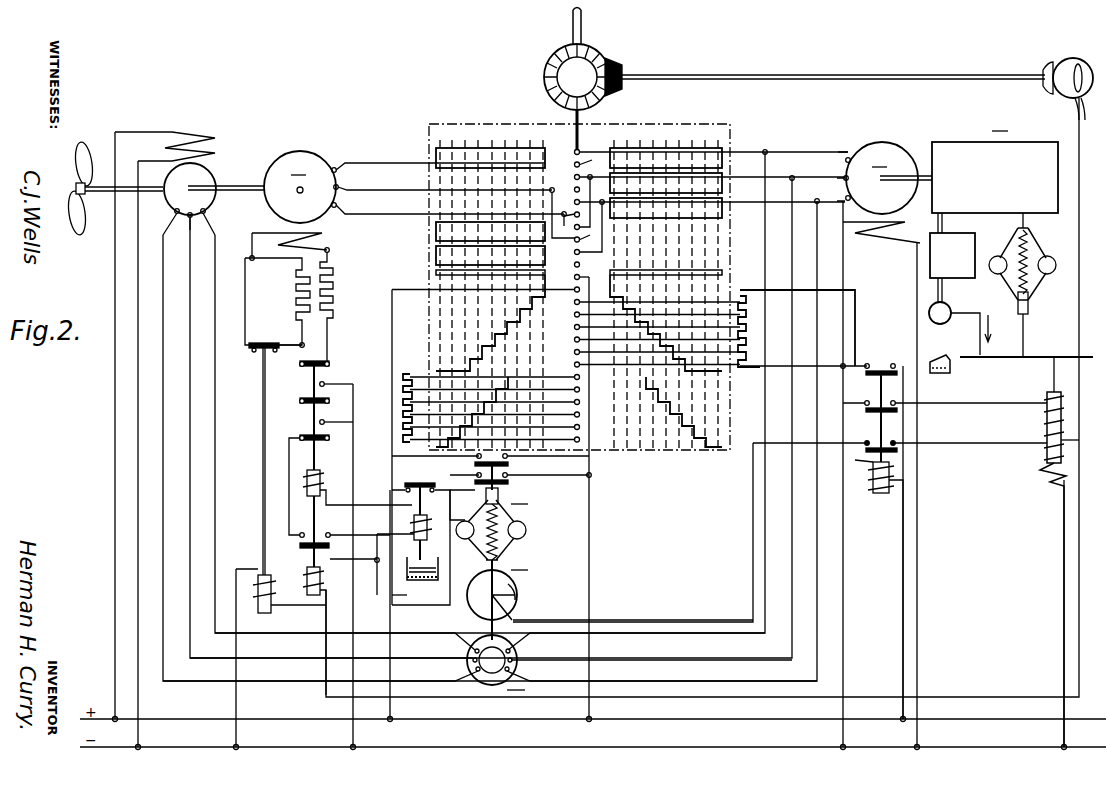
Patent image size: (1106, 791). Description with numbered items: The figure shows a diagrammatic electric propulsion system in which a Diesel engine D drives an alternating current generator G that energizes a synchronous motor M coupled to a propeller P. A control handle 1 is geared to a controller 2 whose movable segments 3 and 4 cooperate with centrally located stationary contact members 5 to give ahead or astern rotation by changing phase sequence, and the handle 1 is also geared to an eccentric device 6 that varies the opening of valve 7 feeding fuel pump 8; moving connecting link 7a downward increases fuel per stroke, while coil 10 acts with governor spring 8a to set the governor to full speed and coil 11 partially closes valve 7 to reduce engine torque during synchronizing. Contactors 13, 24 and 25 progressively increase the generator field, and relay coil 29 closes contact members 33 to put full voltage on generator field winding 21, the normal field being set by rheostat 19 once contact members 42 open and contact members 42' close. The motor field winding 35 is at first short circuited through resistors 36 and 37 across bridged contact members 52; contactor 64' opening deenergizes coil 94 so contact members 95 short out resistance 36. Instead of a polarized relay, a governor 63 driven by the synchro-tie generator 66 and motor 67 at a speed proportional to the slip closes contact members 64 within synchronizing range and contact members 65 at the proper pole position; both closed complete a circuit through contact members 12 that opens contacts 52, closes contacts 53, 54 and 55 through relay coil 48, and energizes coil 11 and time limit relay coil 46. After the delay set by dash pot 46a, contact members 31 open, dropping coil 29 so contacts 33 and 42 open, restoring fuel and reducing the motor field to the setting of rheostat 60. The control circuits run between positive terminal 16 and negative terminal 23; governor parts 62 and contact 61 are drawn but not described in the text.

The propeller P is at (92, 152).
The generator 66 is at (164, 217).
The synchronous motor M is at (301, 187).
The control handle 1 is at (568, 31).
The controller 2 is at (620, 348).
The movable segments 3 is at (722, 193).
The movable segments 4 is at (436, 258).
The stationary contact members 5 is at (574, 165).
The eccentric device 6 is at (1082, 47).
The alternating current generator G is at (877, 178).
The Diesel engine D is at (995, 164).
The valve 7 is at (951, 318).
The connecting link 7a is at (986, 356).
The fuel pump 8 is at (976, 243).
The governor spring 8a is at (1037, 250).
The coil 10 is at (1062, 456).
The coil 11 is at (1062, 406).
The contact members 12 is at (575, 277).
The contactor 13 is at (575, 303).
The contactor 24 is at (575, 316).
The contactor 25 is at (575, 329).
The rheostat 19 is at (741, 296).
The field winding 21 is at (882, 242).
The contact members 33 is at (880, 368).
The contact members 42 is at (945, 398).
The contact members 42' is at (900, 436).
The relay coil 29 is at (889, 486).
The motor field winding 35 is at (322, 238).
The resistor 36 is at (297, 297).
The resistor 37 is at (333, 292).
The contact members 95 is at (258, 352).
The contact members 52 is at (325, 362).
The contact members 53 is at (323, 398).
The contact members 54 is at (323, 435).
The relay coil 48 is at (320, 572).
The contact members 55 is at (314, 535).
The coil 94 is at (272, 578).
The contact members 31 is at (428, 482).
The time limit relay coil 46 is at (426, 518).
The dash pot 46a is at (426, 583).
The motor field rheostat 60 is at (407, 380).
The controller contact 61 is at (580, 388).
The contact members 64 is at (490, 470).
The contactor 64' is at (520, 475).
The governor 63 is at (489, 524).
The governor wheel 62 is at (497, 598).
The contact members 65 is at (515, 602).
The motor 67 is at (490, 662).
The positive terminal 16 is at (487, 718).
The negative terminal 23 is at (540, 746).